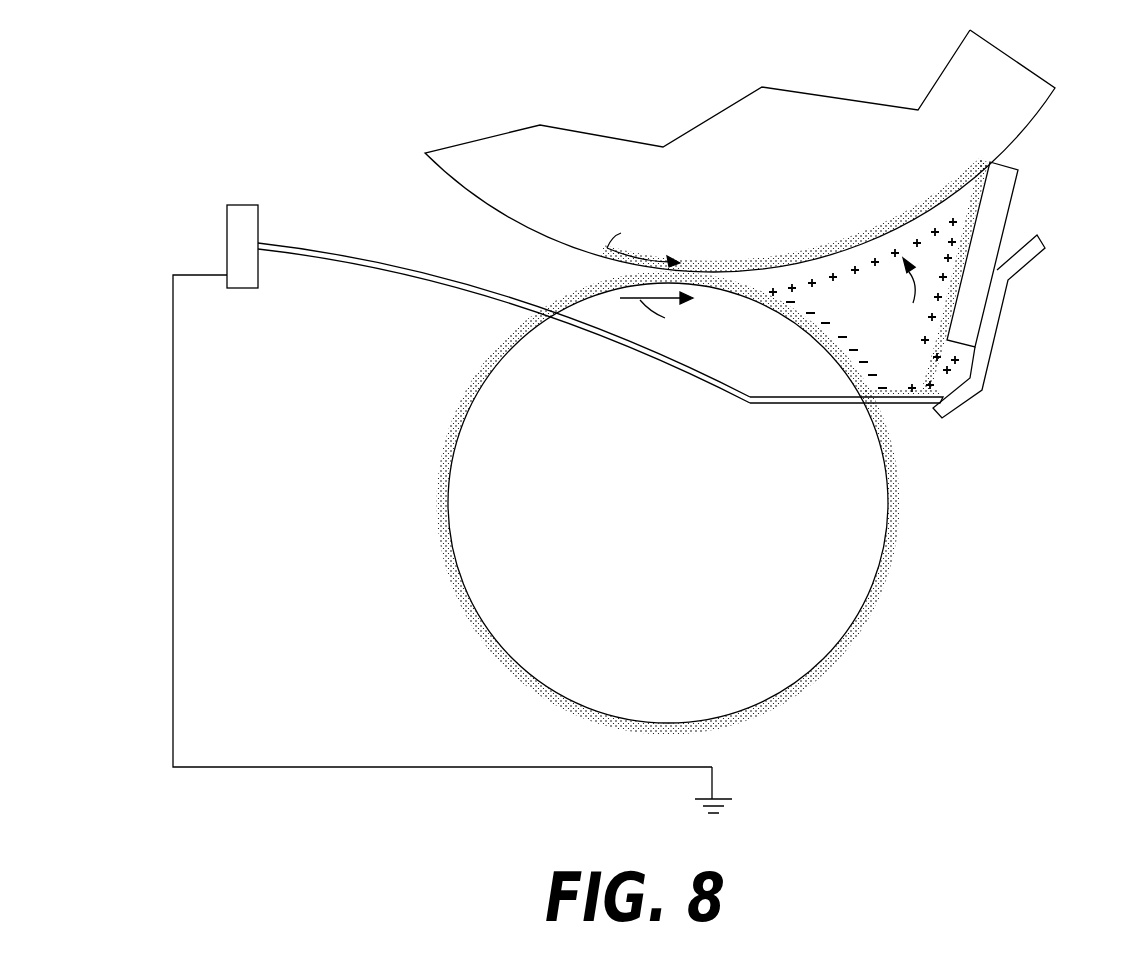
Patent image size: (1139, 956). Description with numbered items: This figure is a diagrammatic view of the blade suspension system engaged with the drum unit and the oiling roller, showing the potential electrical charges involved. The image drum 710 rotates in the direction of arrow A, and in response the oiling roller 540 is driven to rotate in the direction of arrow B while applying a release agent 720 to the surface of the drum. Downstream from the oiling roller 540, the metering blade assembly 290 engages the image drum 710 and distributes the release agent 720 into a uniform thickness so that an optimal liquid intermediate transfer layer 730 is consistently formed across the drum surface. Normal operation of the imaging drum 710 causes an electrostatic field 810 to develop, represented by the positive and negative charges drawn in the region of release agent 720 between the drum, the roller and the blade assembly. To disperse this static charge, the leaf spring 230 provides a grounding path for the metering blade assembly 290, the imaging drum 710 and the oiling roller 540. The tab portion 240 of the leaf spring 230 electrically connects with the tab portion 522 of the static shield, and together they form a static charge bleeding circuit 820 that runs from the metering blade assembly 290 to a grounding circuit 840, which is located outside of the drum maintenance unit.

The image drum 710 is at (742, 207).
The liquid intermediate transfer layer 730 is at (1032, 118).
The oiling roller 540 is at (693, 622).
The release agent 720 is at (895, 238).
The electrostatic field 810 is at (894, 300).
The metering blade assembly 290 is at (1000, 322).
The leaf spring 230 is at (770, 404).
The tab portion 240 is at (260, 243).
The tab portion 522 is at (227, 223).
The static charge bleeding circuit 820 is at (174, 503).
The grounding circuit 840 is at (722, 797).